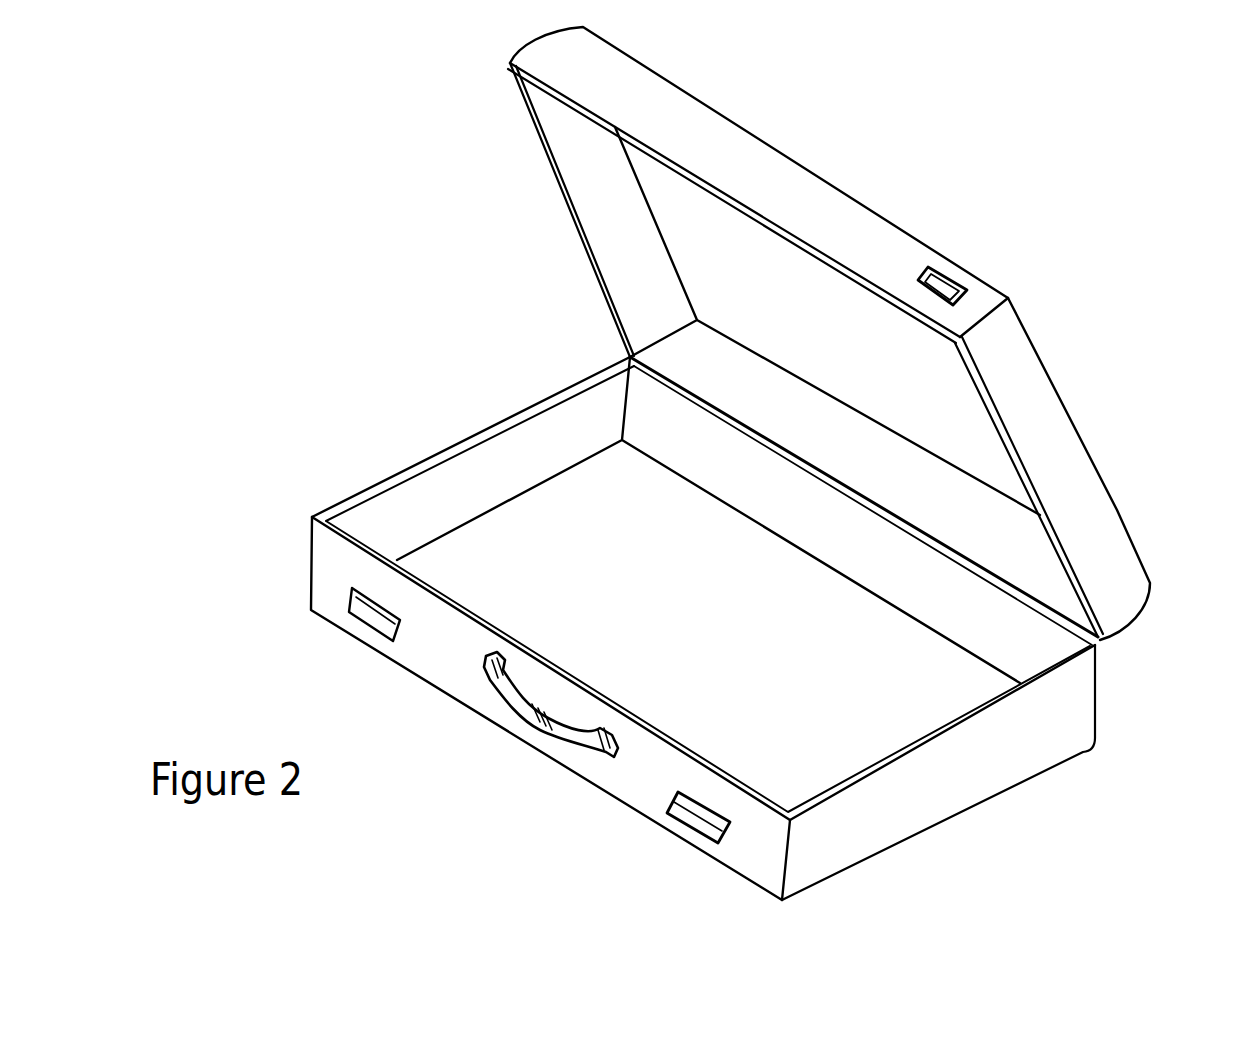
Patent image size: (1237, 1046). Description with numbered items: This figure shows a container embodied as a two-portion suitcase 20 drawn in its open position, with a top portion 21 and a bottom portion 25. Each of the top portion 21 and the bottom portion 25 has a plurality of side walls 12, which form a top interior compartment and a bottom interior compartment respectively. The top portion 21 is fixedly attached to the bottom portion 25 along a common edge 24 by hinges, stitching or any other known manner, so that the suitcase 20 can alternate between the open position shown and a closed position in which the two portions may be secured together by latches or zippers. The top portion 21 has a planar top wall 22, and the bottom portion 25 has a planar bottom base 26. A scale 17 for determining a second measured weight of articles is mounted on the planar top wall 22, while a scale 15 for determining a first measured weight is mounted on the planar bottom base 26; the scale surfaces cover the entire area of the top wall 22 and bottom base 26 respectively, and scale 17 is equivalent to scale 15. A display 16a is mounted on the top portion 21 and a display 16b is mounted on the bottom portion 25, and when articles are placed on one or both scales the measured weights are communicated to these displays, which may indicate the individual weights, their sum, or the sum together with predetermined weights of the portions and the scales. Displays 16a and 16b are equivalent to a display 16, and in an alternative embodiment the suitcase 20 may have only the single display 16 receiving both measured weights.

The side walls 12 is at (723, 462).
The scale 15 is at (655, 627).
The display 16 is at (363, 625).
The display 16a is at (933, 277).
The display 16b is at (707, 813).
The scale 17 is at (770, 300).
The two-portion suitcase 20 is at (310, 315).
The top portion 21 is at (1008, 368).
The planar top wall 22 is at (693, 220).
The common edge 24 is at (1100, 640).
The bottom portion 25 is at (1013, 757).
The planar bottom base 26 is at (530, 575).